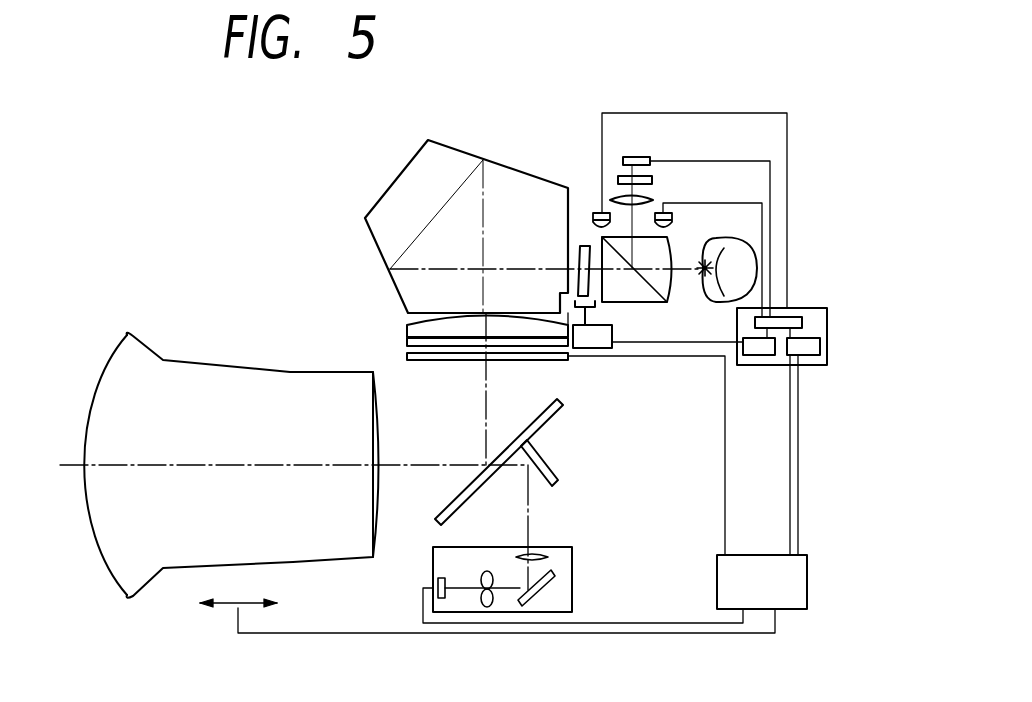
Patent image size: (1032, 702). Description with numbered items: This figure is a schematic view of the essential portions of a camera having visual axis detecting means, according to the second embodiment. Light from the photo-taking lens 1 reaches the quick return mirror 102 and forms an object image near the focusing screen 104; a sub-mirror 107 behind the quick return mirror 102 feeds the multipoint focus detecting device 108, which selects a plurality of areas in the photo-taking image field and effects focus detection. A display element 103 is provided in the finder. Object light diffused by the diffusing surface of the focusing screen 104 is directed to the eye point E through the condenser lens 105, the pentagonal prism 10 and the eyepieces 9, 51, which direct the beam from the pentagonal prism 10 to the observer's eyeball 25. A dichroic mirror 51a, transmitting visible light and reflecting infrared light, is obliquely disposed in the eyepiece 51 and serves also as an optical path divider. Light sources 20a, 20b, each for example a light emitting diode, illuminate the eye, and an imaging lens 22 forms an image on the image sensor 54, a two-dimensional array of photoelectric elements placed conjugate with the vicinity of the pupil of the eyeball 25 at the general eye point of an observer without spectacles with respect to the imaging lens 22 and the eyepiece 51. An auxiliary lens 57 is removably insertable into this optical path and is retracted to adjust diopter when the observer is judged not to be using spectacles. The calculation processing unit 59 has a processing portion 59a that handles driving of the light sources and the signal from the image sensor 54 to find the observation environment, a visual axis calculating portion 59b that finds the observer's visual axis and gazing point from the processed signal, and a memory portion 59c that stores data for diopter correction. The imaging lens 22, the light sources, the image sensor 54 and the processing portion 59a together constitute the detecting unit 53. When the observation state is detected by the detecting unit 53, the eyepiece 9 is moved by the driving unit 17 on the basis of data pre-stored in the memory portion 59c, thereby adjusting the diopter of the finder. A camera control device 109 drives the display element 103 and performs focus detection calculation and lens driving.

The photo-taking lens 1 is at (377, 324).
The pentagonal prism 10 is at (408, 165).
The eyepiece 9 is at (579, 280).
The driving unit 17 is at (606, 350).
The imaging lens 22 is at (608, 199).
The light source 20a is at (667, 212).
The light source 20b is at (594, 222).
The observer's eyeball 25 is at (768, 233).
The eyepiece 51 is at (661, 271).
The dichroic mirror 51a is at (648, 290).
The detecting unit 53 is at (568, 76).
The image sensor 54 is at (623, 158).
The auxiliary lens 57 is at (618, 180).
The calculation processing unit 59 is at (812, 344).
The processing portion 59a is at (802, 320).
The visual axis calculating portion 59b is at (815, 355).
The memory portion 59c is at (760, 355).
The eye point E is at (706, 262).
The quick return mirror 102 is at (545, 425).
The display element 103 is at (557, 362).
The focusing screen 104 is at (455, 345).
The condenser lens 105 is at (427, 332).
The sub-mirror 107 is at (557, 483).
The multipoint focus detecting device 108 is at (572, 572).
The camera control device 109 is at (807, 582).